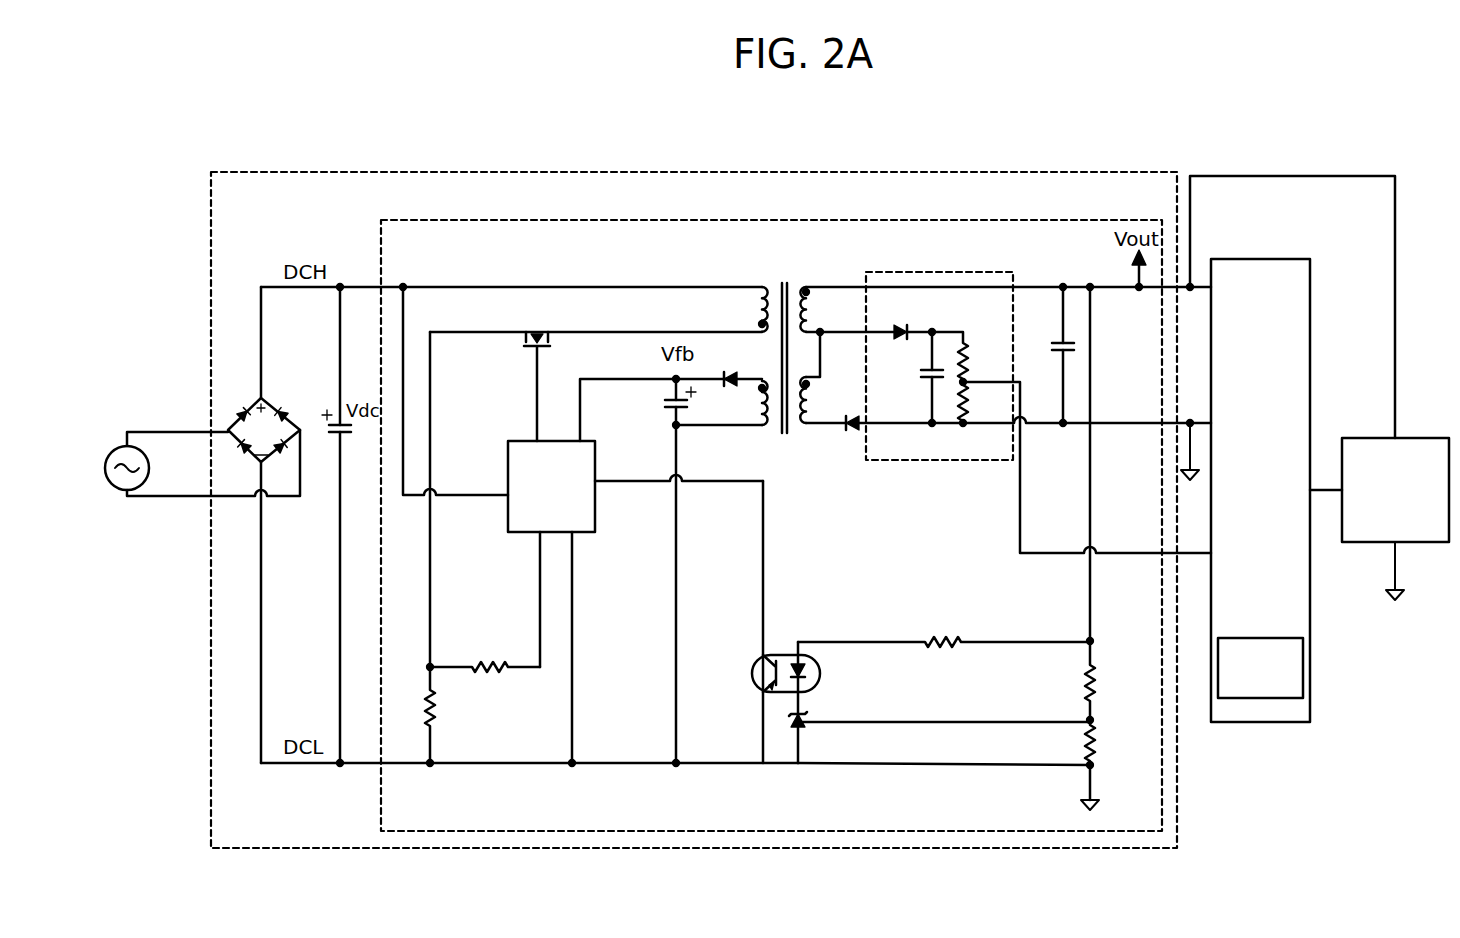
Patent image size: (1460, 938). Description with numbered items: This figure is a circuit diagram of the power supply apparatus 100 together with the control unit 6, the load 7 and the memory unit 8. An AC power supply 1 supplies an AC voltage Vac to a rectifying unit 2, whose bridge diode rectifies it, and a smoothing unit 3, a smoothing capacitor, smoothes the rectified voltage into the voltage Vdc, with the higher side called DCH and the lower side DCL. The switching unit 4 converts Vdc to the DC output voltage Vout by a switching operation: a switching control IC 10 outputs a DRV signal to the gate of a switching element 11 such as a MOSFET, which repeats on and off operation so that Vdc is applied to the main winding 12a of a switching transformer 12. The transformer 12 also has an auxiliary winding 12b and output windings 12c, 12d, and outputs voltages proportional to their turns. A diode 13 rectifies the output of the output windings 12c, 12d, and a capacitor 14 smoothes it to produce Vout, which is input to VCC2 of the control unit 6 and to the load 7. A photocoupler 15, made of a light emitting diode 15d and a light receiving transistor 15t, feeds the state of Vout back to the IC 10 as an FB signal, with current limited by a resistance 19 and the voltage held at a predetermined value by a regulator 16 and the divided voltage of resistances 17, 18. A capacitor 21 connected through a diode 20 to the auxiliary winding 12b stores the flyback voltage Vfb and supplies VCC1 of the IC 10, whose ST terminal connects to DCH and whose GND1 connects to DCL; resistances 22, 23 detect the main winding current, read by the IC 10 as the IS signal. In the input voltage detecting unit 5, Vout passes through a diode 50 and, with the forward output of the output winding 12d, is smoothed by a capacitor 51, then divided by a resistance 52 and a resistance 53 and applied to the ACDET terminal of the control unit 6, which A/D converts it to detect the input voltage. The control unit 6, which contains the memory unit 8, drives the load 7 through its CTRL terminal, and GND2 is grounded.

The AC power supply 1 is at (106, 456).
The rectifying unit 2 is at (250, 410).
The smoothing unit 3 is at (334, 414).
The switching unit 4 is at (381, 220).
The input voltage detecting unit 5 is at (939, 344).
The control unit 6 is at (1260, 491).
The load 7 is at (1434, 438).
The memory unit 8 is at (1262, 698).
The switching control IC 10 is at (505, 443).
The switching element 11 is at (526, 333).
The switching transformer 12 is at (785, 339).
The main winding 12a is at (760, 306).
The auxiliary winding 12b is at (760, 402).
The output winding 12c is at (809, 397).
The output winding 12d is at (808, 307).
The diode 13 is at (849, 421).
The capacitor 14 is at (1056, 346).
The photocoupler 15 is at (783, 647).
The light emitting diode 15d is at (808, 668).
The light receiving transistor 15t is at (768, 678).
The regulator 16 is at (806, 708).
The resistance 17 is at (1096, 684).
The resistance 18 is at (1096, 738).
The resistance 19 is at (940, 648).
The diode 20 is at (731, 372).
The capacitor 21 is at (670, 404).
The resistance 22 is at (426, 700).
The resistance 23 is at (488, 660).
The diode 50 is at (899, 327).
The capacitor 51 is at (927, 373).
The resistance 52 is at (969, 348).
The resistance 53 is at (969, 410).
The power supply apparatus 100 is at (693, 172).